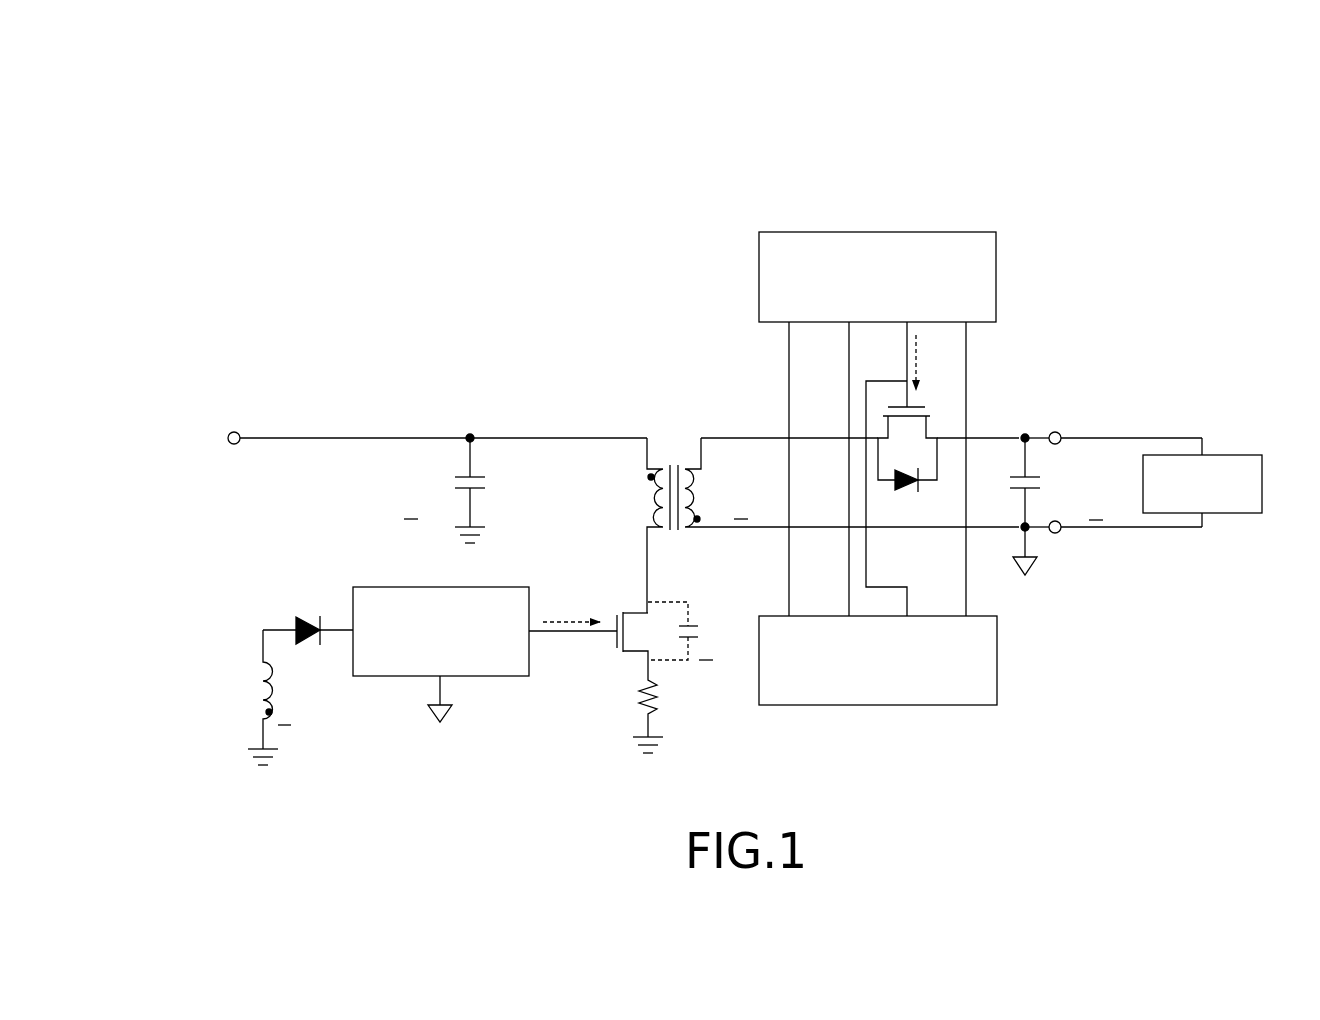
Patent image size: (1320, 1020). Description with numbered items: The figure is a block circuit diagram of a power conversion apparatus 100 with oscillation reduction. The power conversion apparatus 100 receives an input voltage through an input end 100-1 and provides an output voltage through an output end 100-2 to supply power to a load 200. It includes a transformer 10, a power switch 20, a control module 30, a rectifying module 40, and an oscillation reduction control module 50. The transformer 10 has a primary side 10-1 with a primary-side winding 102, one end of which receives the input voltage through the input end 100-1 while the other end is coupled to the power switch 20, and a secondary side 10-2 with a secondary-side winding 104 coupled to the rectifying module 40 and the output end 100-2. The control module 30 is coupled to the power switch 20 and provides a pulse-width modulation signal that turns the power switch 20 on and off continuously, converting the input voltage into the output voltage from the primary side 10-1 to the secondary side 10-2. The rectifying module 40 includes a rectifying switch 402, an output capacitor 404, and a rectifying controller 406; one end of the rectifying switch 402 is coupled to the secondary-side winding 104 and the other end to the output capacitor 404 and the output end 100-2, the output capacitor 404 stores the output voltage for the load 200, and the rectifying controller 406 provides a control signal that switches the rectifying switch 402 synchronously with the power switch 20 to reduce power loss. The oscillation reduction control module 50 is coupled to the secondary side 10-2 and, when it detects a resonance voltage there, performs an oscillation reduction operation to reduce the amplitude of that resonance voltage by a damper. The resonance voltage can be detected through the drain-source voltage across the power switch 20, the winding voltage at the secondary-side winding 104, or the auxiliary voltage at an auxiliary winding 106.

The power conversion apparatus 100 is at (728, 80).
The input end 100-1 is at (230, 428).
The output end 100-2 is at (1055, 430).
The transformer 10 is at (672, 450).
The primary side 10-1 is at (604, 410).
The secondary side 10-2 is at (750, 410).
The primary-side winding 102 is at (650, 507).
The secondary-side winding 104 is at (697, 506).
The auxiliary winding 106 is at (252, 675).
The power switch 20 is at (618, 653).
The control module 30 is at (440, 592).
The rectifying module 40 is at (843, 217).
The rectifying switch 402 is at (905, 490).
The output capacitor 404 is at (1012, 483).
The rectifying controller 406 is at (878, 240).
The oscillation reduction control module 50 is at (878, 705).
The load 200 is at (1215, 456).